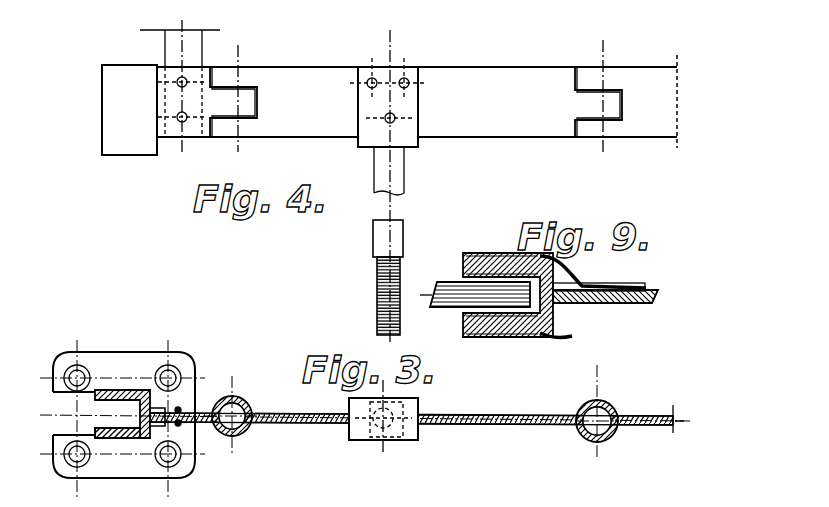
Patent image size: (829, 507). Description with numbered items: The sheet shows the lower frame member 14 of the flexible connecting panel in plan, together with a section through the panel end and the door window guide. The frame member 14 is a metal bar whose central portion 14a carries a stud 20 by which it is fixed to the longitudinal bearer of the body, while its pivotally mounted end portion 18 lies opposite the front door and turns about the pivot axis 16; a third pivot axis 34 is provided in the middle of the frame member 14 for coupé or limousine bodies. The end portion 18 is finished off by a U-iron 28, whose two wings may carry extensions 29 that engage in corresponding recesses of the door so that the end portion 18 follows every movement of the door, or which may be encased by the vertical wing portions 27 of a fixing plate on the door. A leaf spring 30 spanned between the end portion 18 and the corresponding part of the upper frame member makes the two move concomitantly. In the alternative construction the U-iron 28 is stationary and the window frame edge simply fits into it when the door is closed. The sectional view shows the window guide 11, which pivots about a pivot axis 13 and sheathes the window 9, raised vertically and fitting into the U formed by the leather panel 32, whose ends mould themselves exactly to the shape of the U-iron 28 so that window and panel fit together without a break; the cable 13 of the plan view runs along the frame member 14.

In FIG. 9, the window 9 is at (472, 303).
In FIG. 9, the window guide 11 is at (473, 255).
In FIG. 3, the pivot axis 13 is at (365, 456).
In FIG. 4, the lower frame member 14 is at (654, 138).
In FIG. 3, the lower frame member 14 is at (640, 429).
In FIG. 4, the central portion of the lower frame member 14a is at (291, 124).
In FIG. 3, the central portion of the lower frame member 14a is at (312, 426).
In FIG. 4, the pivot axis 16 is at (243, 61).
In FIG. 3, the pivot axis 16 is at (224, 425).
In FIG. 4, the end portion 18 is at (165, 108).
In FIG. 9, the end portion 18 is at (634, 305).
In FIG. 3, the end portion 18 is at (160, 426).
In FIG. 4, the stud 20 is at (400, 175).
In FIG. 3, the stud 20 is at (383, 442).
In FIG. 9, the vertical wing portion 27 is at (506, 257).
In FIG. 3, the vertical wing portion 27 is at (113, 390).
In FIG. 4, the U-iron 28 is at (102, 100).
In FIG. 9, the U-iron 28 is at (563, 328).
In FIG. 3, the U-iron 28 is at (110, 440).
In FIG. 4, the extension 29 is at (122, 157).
In FIG. 3, the extension 29 is at (135, 463).
In FIG. 4, the leaf spring 30 is at (171, 53).
In FIG. 9, the leather panel 32 is at (566, 287).
In FIG. 4, the third pivot axis 34 is at (604, 63).
In FIG. 3, the third pivot axis 34 is at (586, 433).